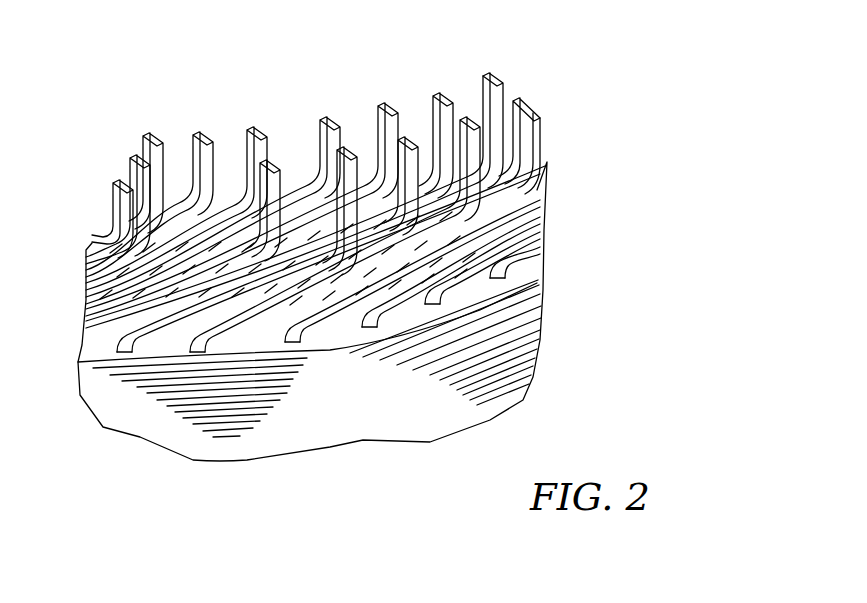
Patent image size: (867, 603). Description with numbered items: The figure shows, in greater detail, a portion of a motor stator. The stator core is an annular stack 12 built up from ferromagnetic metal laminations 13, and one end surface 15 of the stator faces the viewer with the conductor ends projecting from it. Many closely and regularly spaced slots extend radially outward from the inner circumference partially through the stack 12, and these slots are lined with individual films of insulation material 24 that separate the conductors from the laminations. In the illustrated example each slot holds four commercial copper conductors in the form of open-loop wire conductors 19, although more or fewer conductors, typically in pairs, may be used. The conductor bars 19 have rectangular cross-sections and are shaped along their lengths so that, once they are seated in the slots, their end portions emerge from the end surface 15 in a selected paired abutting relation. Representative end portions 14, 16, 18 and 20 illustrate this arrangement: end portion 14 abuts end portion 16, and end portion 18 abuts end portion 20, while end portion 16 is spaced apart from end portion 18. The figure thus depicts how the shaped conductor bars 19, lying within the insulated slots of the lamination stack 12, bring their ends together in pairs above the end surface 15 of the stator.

The stack 12 is at (392, 407).
The ferromagnetic metal laminations 13 is at (533, 317).
The end portion 14 is at (493, 72).
The end surface 15 is at (525, 277).
The end portion 16 is at (507, 82).
The end portion 18 is at (520, 103).
The open-loop wire conductors 19 is at (225, 318).
The end portion 20 is at (533, 113).
The insulation material 24 is at (440, 300).